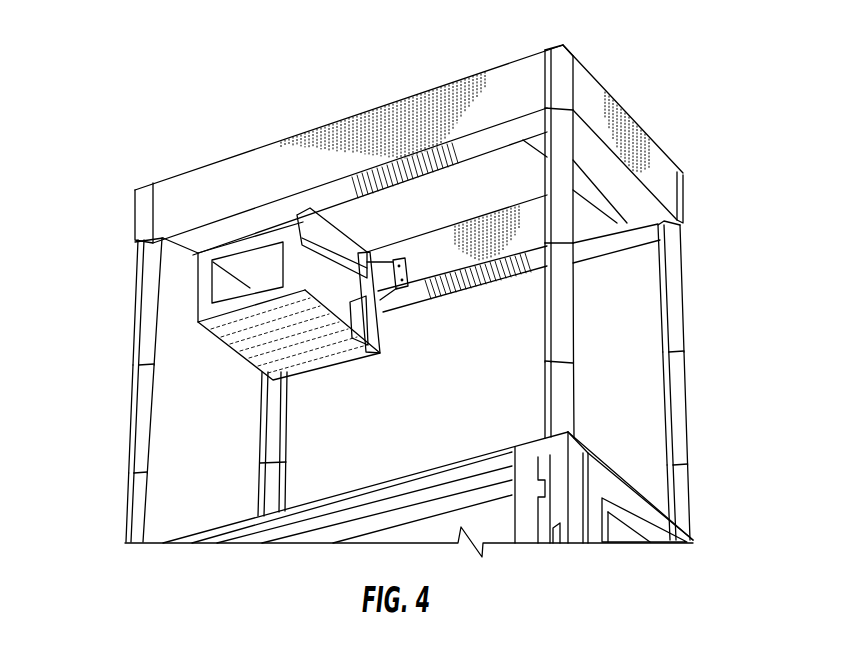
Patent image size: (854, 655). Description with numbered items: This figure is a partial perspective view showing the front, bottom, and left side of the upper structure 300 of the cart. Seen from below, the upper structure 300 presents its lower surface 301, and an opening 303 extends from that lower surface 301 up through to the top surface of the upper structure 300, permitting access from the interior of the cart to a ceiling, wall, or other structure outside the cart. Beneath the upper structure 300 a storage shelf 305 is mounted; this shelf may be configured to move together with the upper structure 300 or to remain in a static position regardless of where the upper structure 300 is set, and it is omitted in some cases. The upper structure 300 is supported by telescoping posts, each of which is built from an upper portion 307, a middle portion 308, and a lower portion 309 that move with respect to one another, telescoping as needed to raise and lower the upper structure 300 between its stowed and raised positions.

The upper structure 300 is at (636, 64).
The lower surface 301 is at (618, 182).
The opening 303 is at (437, 212).
The storage shelf 305 is at (318, 356).
The upper portion 307 is at (142, 340).
The middle portion 308 is at (142, 412).
The lower portion 309 is at (130, 514).